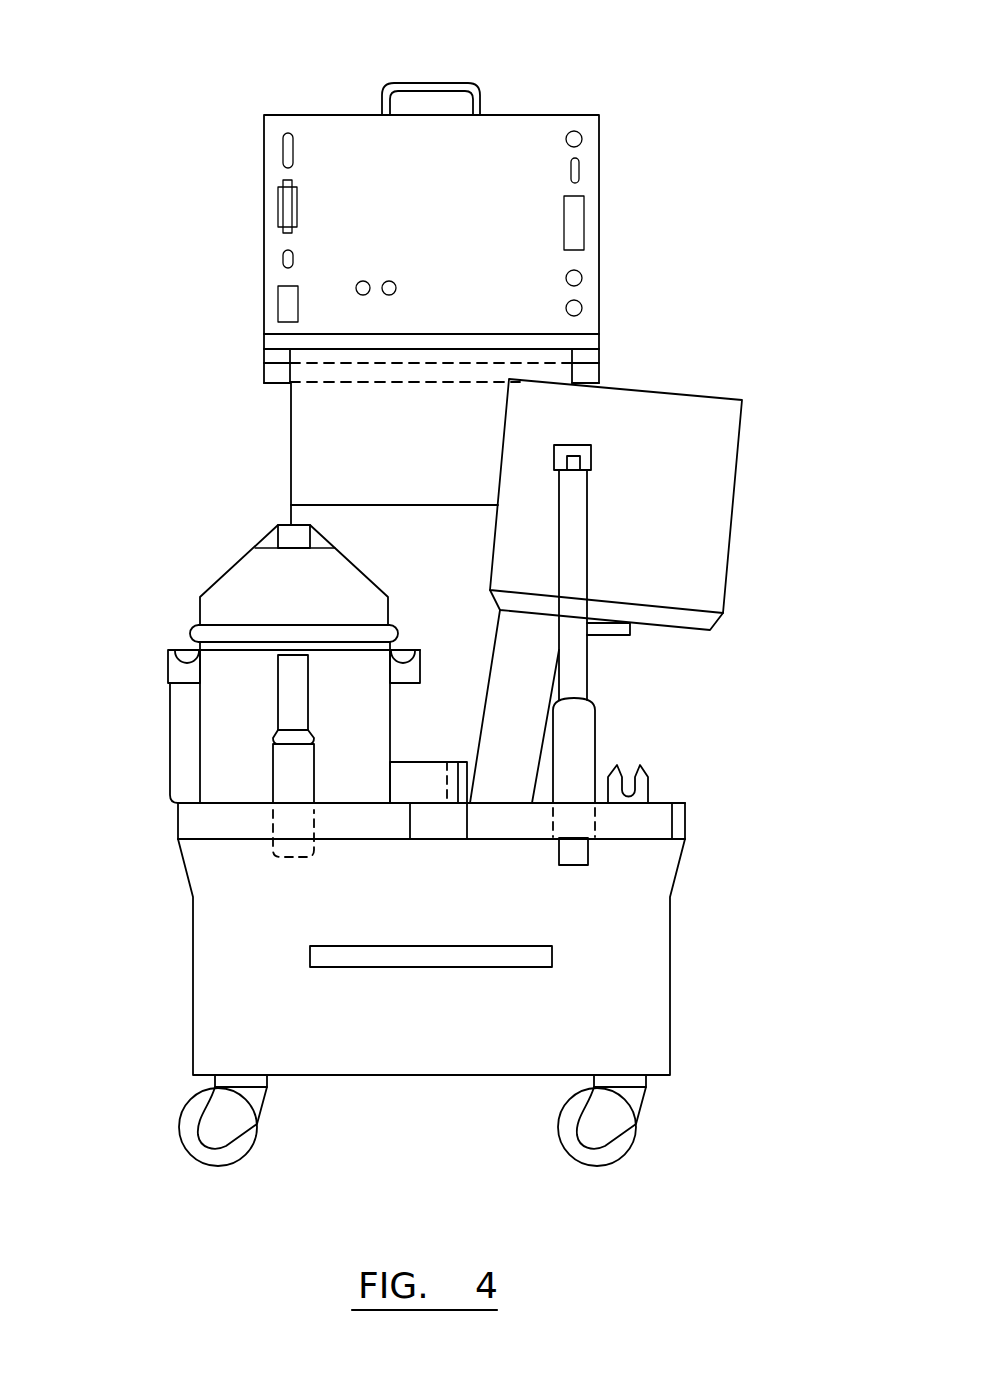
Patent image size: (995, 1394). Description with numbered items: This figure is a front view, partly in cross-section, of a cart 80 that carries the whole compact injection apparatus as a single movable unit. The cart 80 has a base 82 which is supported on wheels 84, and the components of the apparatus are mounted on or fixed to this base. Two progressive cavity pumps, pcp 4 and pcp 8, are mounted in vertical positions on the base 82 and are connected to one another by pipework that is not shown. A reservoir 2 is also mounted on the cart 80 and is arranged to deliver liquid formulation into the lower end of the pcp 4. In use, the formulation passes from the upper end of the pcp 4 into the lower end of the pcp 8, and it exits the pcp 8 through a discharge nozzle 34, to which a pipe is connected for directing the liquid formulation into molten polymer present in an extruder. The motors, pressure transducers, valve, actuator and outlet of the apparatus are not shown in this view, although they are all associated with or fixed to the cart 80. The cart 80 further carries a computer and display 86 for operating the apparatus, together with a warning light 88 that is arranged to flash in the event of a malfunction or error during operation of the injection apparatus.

The warning light 88 is at (328, 94).
The cart 80 is at (278, 463).
The reservoir 2 is at (222, 559).
The pcp 4 is at (273, 768).
The computer and display 86 is at (655, 388).
The discharge nozzle 34 is at (591, 457).
The pcp 8 is at (587, 668).
The base 82 is at (670, 945).
The wheels 84 is at (178, 1128).